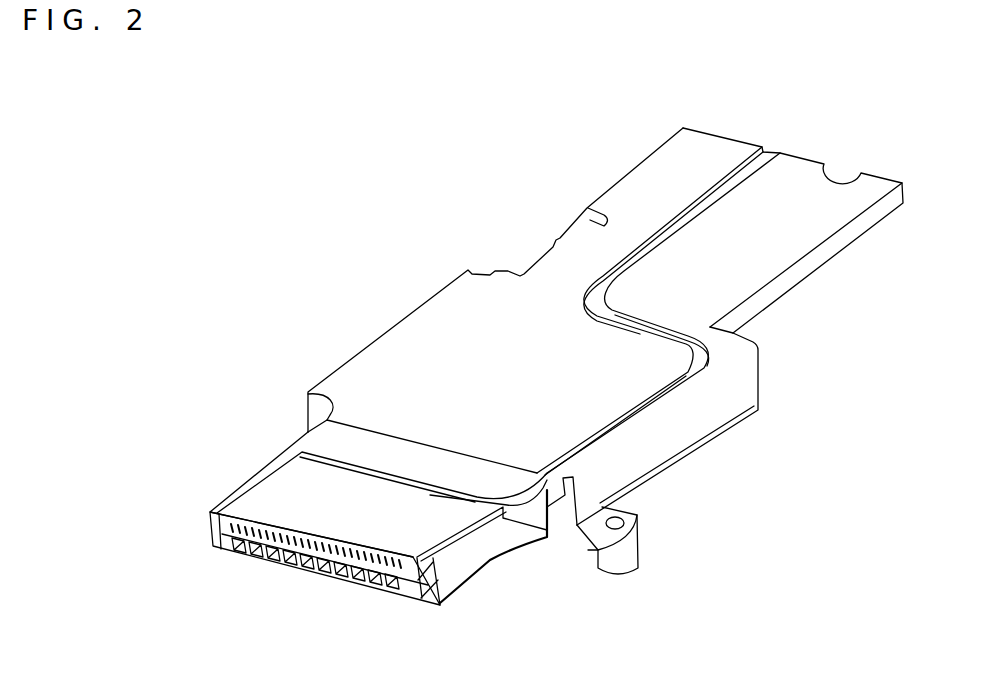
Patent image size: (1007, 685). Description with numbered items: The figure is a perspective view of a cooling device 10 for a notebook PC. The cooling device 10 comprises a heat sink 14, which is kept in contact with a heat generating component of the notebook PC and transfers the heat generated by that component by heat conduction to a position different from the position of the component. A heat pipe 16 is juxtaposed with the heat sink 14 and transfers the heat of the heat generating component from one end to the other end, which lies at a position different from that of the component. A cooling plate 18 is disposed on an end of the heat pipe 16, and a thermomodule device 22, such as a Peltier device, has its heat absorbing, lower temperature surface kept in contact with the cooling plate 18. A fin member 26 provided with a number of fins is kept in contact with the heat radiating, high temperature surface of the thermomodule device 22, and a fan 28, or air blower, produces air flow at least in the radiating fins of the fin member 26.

The cooling device 10 is at (348, 212).
The heat sink 14 is at (617, 172).
The heat pipe 16 is at (594, 295).
The cooling plate 18 is at (283, 485).
The thermomodule device 22 is at (210, 513).
The fin member 26 is at (210, 538).
The fan 28 is at (597, 385).